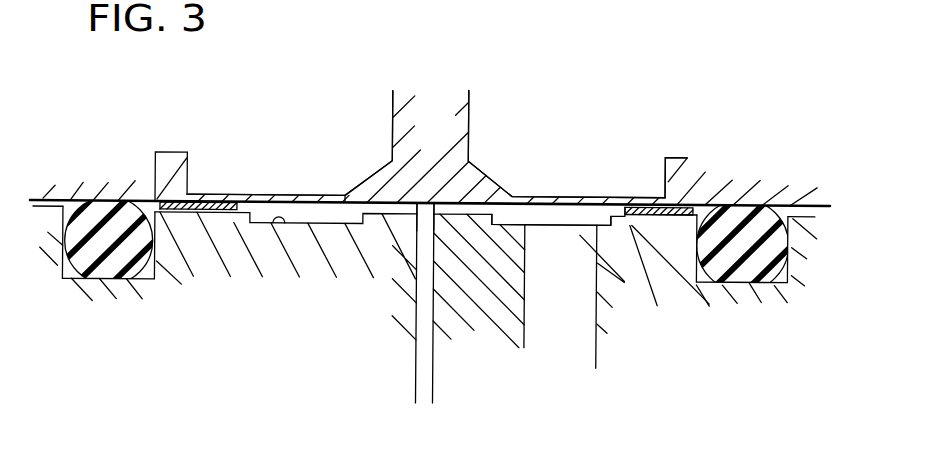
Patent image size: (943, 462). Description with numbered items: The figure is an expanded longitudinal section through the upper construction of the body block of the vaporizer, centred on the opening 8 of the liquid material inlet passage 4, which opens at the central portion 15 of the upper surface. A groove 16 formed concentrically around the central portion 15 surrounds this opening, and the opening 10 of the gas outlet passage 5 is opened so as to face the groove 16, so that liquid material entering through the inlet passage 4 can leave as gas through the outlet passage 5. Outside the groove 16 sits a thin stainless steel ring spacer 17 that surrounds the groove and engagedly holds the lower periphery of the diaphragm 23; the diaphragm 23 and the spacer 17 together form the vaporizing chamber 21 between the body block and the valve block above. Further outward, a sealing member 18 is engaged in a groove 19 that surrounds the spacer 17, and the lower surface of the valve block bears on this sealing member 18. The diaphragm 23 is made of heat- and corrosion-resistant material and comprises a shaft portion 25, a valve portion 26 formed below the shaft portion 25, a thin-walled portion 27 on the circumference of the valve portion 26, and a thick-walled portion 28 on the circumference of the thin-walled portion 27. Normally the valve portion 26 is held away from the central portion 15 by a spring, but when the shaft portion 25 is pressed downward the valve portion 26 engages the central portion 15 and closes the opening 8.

The liquid material inlet passage 4 is at (425, 353).
The gas outlet passage 5 is at (580, 290).
The opening of the liquid material inlet passage 8 is at (424, 220).
The opening of the gas outlet passage 10 is at (605, 250).
The central portion 15 is at (488, 187).
The groove 16 is at (286, 234).
The ring spacer 17 is at (207, 201).
The sealing member 18 is at (87, 215).
The groove 19 is at (70, 270).
The vaporizing chamber 21 is at (555, 210).
The diaphragm 23 is at (631, 200).
The shaft portion 25 is at (472, 105).
The valve portion 26 is at (425, 191).
The thin-walled portion 27 is at (278, 193).
The thick-walled portion 28 is at (163, 162).